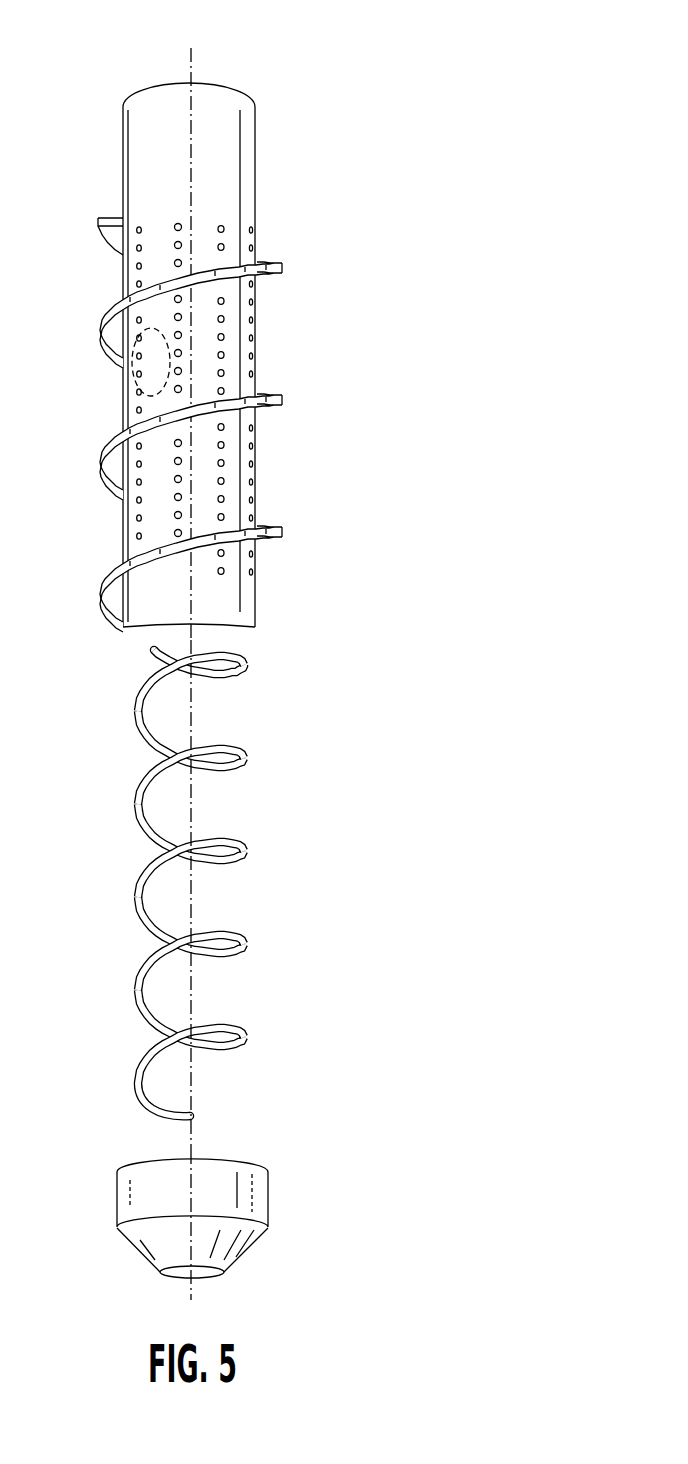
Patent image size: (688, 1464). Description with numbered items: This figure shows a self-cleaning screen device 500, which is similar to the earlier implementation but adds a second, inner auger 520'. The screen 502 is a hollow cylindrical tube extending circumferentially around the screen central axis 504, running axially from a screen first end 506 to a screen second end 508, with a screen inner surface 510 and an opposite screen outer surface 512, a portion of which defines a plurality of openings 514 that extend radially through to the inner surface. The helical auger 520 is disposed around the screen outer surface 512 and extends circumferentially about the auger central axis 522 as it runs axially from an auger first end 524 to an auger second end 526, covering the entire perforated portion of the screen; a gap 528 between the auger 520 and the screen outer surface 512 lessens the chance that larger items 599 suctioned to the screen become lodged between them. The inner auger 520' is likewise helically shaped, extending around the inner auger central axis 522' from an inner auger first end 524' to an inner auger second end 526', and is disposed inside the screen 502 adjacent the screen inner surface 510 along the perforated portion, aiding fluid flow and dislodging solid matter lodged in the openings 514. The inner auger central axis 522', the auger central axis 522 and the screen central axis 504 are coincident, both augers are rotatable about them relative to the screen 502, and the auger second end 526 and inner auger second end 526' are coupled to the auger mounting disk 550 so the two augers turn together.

The self-cleaning screen device 500 is at (455, 236).
The screen 502 is at (139, 182).
The screen central axis 504 is at (193, 48).
The closed top end 506 is at (229, 92).
The open bottom end 508 is at (238, 628).
The screen inner surface 510 is at (153, 80).
The inner wall surface 512 is at (244, 198).
The plurality of openings 514 is at (225, 367).
The auger 520 is at (157, 446).
The auger central axis 522 is at (256, 578).
The inner auger central axis 522' is at (277, 653).
The upper end of helical flight 524 is at (78, 221).
The auger second end 526 is at (157, 596).
The underside of helical flight 528 is at (120, 336).
The region of perforations 599 is at (126, 395).
The inner auger 520' is at (278, 851).
The inner auger first end 524' is at (151, 674).
The inner auger second end 526' is at (237, 1074).
The auger mounting disk 550 is at (262, 1242).